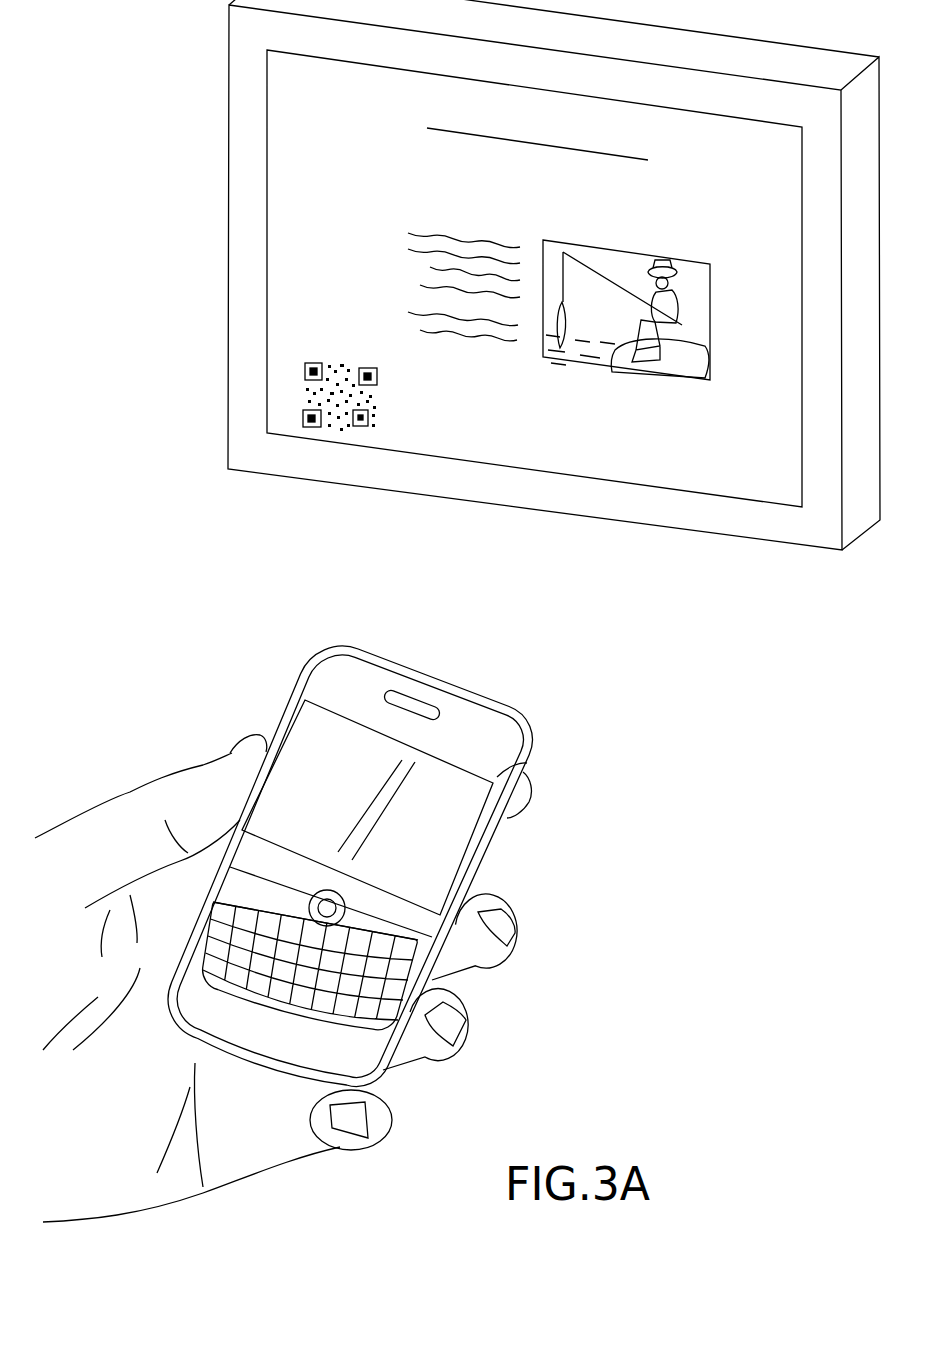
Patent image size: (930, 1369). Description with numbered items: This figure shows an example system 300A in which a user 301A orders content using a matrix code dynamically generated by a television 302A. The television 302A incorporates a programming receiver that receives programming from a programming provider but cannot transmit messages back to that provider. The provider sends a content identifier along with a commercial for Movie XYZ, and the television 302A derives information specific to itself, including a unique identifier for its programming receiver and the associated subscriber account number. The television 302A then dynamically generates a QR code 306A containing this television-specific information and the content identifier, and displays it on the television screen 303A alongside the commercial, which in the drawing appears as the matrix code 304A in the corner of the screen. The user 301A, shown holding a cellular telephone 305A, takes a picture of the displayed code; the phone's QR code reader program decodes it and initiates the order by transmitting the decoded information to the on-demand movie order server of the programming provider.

The system 300A is at (720, 928).
The user 301A is at (128, 790).
The television 302A is at (228, 147).
The television screen 303A is at (448, 445).
The QR code 304A is at (323, 388).
The cellular telephone 305A is at (317, 658).
The QR code 306A is at (527, 763).